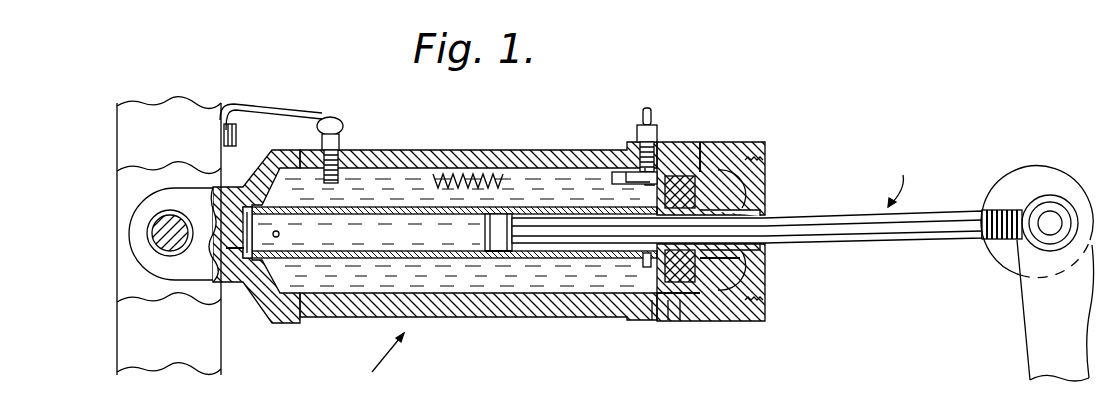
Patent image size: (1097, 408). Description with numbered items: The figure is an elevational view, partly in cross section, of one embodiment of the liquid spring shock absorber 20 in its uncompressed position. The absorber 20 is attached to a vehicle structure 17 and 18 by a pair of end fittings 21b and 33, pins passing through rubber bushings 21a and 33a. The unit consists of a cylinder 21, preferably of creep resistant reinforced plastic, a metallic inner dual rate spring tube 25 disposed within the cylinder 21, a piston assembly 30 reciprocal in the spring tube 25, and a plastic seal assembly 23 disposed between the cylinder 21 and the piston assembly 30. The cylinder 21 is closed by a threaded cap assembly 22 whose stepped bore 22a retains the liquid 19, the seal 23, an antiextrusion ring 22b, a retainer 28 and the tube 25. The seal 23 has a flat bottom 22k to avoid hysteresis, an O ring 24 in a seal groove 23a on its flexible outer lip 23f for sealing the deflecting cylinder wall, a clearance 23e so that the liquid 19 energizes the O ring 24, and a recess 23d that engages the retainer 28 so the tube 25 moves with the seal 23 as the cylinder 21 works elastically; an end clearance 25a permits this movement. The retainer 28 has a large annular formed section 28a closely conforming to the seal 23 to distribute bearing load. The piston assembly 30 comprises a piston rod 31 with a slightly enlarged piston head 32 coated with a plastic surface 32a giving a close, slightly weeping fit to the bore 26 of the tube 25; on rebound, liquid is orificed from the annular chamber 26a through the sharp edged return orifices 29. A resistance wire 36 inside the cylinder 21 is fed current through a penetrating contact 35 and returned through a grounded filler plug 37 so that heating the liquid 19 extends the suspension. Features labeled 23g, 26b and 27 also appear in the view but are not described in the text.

The vehicle structure 17 is at (1030, 347).
The vehicle structure 18 is at (130, 328).
The liquid 19 is at (297, 282).
The liquid spring shock absorber 20 is at (359, 363).
The cylinder 21 is at (496, 312).
The rubber bushing 21a is at (148, 241).
The end fitting 21b is at (143, 204).
The threaded cap assembly 22 is at (725, 208).
The stepped bore 22a is at (748, 240).
The antiextrusion ring 22b is at (770, 250).
The flat bottom of seal 22k is at (735, 195).
The plastic seal assembly 23 is at (742, 276).
The seal groove 23a is at (668, 300).
The recess 23d is at (710, 142).
The clearance 23e is at (652, 300).
The outer lip 23f is at (660, 185).
The threaded port 23g is at (747, 155).
The O ring 24 is at (685, 300).
The inner dual rate spring tube 25 is at (351, 258).
The end clearance 25a is at (240, 250).
The bore 26 is at (350, 216).
The annular chamber 26a is at (521, 207).
The inner tube end 26b is at (256, 246).
The orifice 27 is at (280, 235).
The retainer 28 is at (613, 300).
The annular formed section 28a is at (740, 262).
The return orifices 29 is at (647, 258).
The piston assembly 30 is at (880, 189).
The piston rod 31 is at (918, 235).
The piston head 32 is at (490, 226).
The plastic surface 32a is at (490, 258).
The end fitting 33 is at (1040, 172).
The rubber bushing 33a is at (1037, 198).
The penetrating contact 35 is at (641, 132).
The resistance wire 36 is at (480, 174).
The filler plug 37 is at (343, 136).